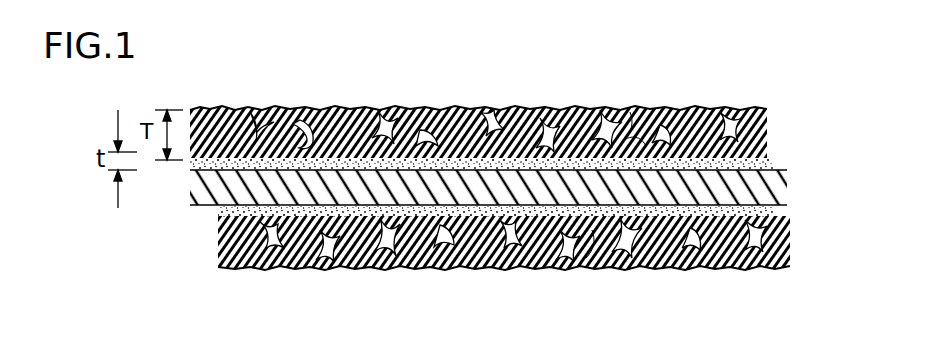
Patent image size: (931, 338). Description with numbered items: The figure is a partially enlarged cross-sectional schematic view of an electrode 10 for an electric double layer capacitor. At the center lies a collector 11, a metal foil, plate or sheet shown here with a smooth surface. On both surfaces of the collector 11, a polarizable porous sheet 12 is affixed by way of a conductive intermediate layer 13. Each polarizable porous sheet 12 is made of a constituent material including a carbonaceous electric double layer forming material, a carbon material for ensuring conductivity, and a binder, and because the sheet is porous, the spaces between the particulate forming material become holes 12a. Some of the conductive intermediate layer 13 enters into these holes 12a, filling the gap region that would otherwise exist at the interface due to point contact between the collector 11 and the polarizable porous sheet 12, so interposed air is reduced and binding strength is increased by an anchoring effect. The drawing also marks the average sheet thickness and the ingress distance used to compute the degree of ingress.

The electrode 10 is at (488, 96).
The collector 11 is at (767, 195).
The polarizable porous sheet 12 is at (760, 130).
The holes 12a is at (638, 112).
The conductive intermediate layer 13 is at (773, 167).